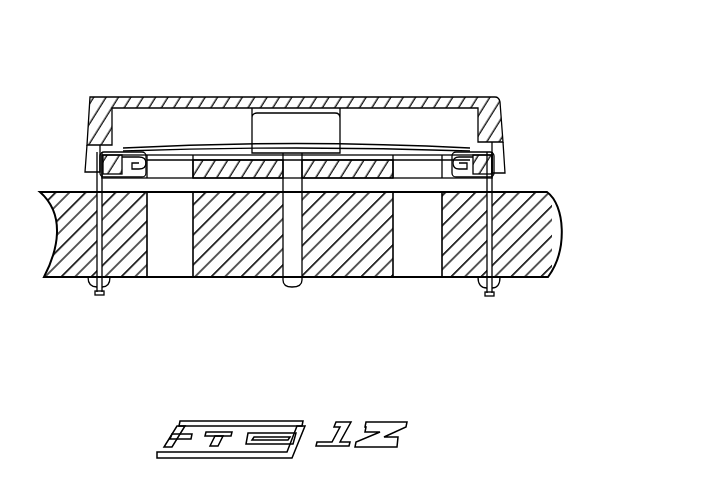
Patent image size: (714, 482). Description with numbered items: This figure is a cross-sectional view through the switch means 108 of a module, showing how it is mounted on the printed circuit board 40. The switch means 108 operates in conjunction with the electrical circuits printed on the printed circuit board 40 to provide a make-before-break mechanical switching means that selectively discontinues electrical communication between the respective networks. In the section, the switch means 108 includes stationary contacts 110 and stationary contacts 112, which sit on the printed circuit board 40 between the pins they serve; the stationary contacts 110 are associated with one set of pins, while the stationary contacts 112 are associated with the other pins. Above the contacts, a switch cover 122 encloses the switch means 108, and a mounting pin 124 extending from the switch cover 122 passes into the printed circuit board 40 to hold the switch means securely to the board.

The printed circuit board member 40 is at (542, 229).
The switch means 108 is at (368, 192).
The stationary contacts 110 is at (123, 152).
The stationary contacts 112 is at (463, 152).
The switch cover 122 is at (357, 97).
The mounting pin 124 is at (290, 289).